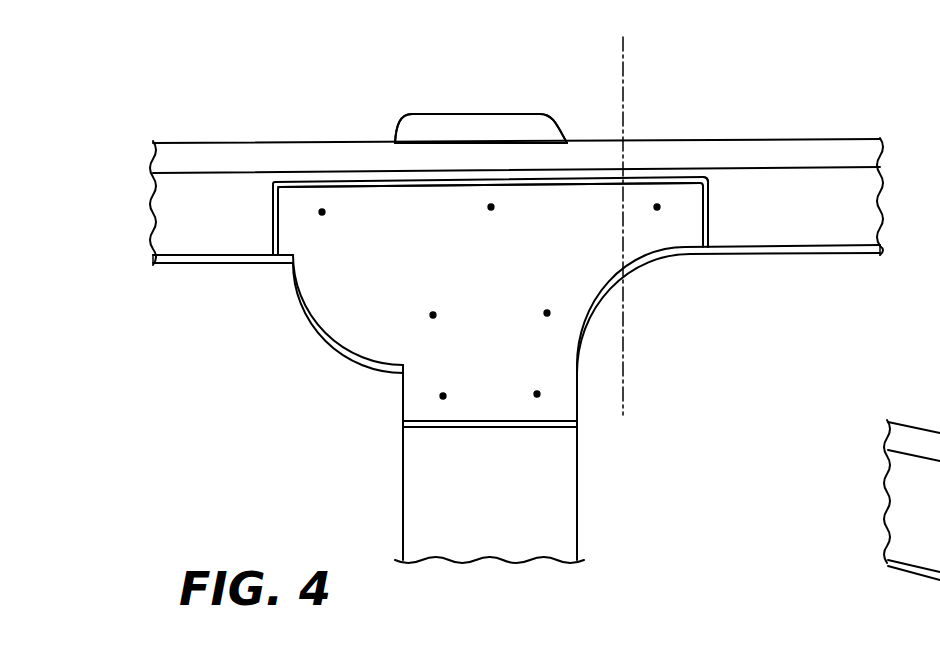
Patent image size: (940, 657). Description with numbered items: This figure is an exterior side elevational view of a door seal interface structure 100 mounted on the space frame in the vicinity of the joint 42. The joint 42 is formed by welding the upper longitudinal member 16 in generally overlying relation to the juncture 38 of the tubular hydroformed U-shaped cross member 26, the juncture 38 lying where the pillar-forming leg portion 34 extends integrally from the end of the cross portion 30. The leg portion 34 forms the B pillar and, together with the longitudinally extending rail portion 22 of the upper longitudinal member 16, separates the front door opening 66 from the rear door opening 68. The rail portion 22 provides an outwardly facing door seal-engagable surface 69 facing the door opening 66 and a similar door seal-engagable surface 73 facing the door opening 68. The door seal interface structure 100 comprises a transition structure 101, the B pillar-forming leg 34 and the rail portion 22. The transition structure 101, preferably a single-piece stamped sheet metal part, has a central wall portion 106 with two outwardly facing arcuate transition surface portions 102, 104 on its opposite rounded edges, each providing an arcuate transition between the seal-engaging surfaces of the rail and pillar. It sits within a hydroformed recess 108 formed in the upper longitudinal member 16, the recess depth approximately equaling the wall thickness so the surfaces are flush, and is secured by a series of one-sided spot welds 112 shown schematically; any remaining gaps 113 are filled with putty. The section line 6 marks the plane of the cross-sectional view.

The section line 6- 6 is at (586, 62).
The upper longitudinal member 16 is at (809, 137).
The longitudinally extending rail portion 22 is at (853, 150).
The U-shaped cross member 26 is at (447, 107).
The cross portion 30 is at (407, 120).
The pillar-forming leg portion 34 is at (567, 517).
The juncture 38 is at (428, 137).
The joint 42 is at (490, 141).
The door opening 66 is at (312, 490).
The door opening 68 is at (708, 418).
The door seal-engagable surface 69 is at (203, 237).
The door seal-engagable surface 73 is at (815, 240).
The door seal interface structure 100 is at (516, 315).
The transition structure 101 is at (603, 272).
The arcuate transition surface portion 102 is at (300, 252).
The arcuate transition surface portion 104 is at (657, 257).
The central wall portion 106 is at (412, 363).
The hydroformed recess 108 is at (713, 185).
The one-sided spot welds 112 is at (491, 207).
The gaps 113 is at (706, 223).